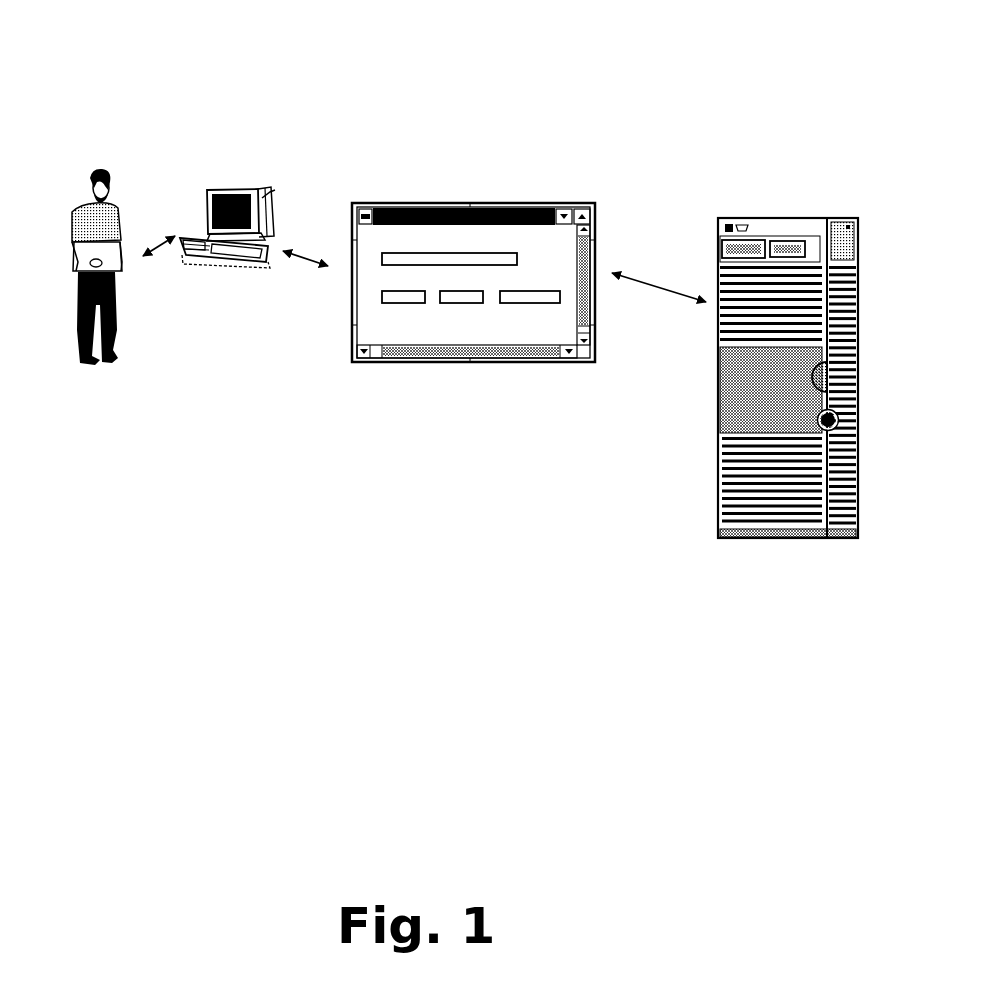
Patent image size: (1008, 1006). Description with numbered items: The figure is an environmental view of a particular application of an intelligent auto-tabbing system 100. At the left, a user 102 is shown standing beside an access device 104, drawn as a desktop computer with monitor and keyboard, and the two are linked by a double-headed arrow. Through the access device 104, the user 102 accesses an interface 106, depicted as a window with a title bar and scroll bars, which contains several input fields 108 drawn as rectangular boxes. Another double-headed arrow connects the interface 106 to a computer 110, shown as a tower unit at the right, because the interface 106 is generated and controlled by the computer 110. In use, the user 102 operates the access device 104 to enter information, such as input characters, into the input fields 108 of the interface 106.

The intelligent auto-tabbing system 100 is at (250, 71).
The user 102 is at (96, 293).
The access device 104 is at (227, 269).
The interface 106 is at (480, 271).
The input fields 108 is at (530, 298).
The computer 110 is at (788, 415).